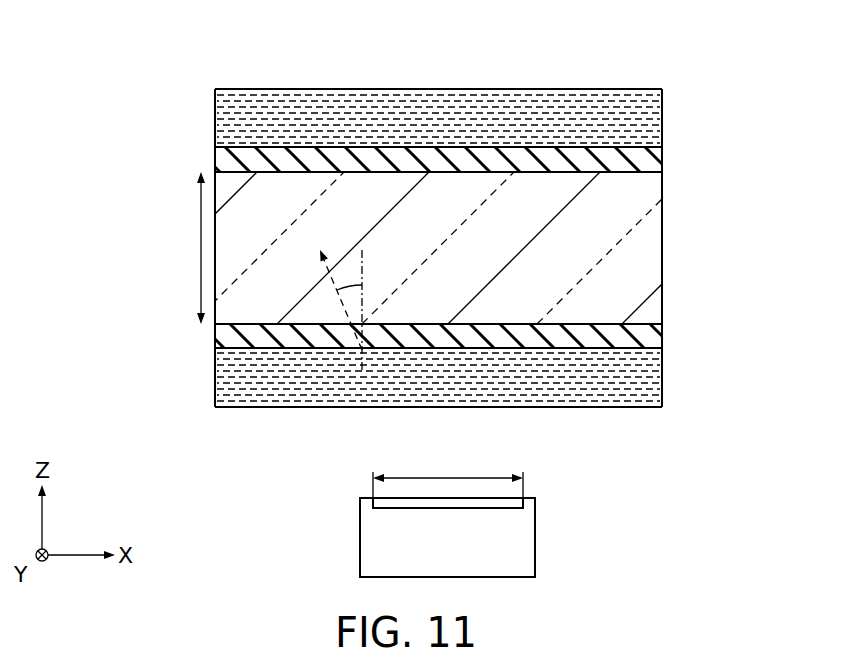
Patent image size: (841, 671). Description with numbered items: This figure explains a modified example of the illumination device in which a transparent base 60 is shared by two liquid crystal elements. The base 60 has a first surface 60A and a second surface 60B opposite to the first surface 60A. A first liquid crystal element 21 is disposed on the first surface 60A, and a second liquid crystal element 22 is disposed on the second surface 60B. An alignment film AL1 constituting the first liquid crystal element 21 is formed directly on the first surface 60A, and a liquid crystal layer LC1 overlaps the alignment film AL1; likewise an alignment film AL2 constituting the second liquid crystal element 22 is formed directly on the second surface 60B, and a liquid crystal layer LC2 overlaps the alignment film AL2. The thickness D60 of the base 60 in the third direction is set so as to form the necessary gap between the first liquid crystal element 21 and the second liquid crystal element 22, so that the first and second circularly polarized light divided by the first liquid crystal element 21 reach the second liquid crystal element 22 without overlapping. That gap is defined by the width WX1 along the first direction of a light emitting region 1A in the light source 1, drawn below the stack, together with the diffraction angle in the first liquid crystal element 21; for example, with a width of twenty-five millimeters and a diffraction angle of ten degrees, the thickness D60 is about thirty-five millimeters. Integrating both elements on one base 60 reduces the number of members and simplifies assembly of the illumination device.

The second liquid crystal element 22 is at (212, 88).
The first liquid crystal element 21 is at (212, 409).
The transparent base 60 is at (652, 252).
The first surface 60A is at (440, 334).
The second surface 60B is at (430, 162).
The liquid crystal layer LC1 is at (653, 380).
The liquid crystal layer LC2 is at (653, 115).
The alignment film AL1 is at (653, 336).
The alignment film AL2 is at (653, 158).
The thickness of the base D60 is at (199, 245).
The width of the light emitting region WX1 is at (472, 478).
The light source 1 is at (375, 542).
The light emitting region 1A is at (490, 506).